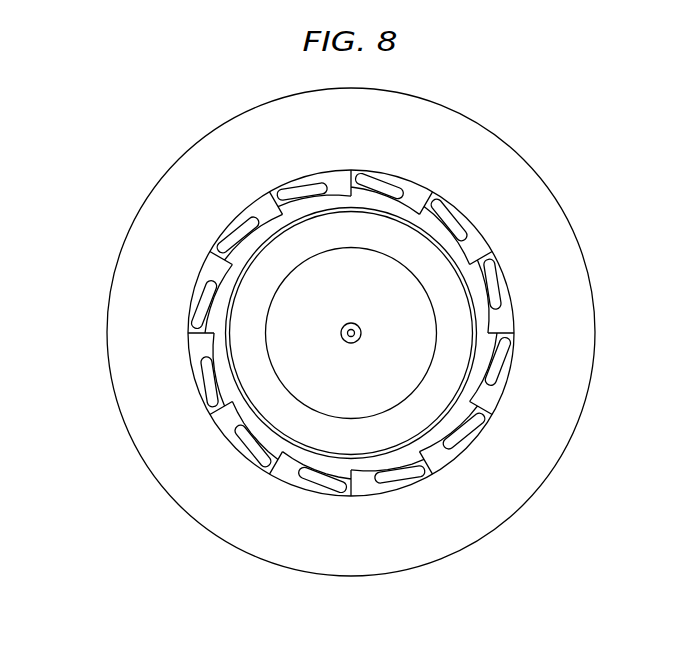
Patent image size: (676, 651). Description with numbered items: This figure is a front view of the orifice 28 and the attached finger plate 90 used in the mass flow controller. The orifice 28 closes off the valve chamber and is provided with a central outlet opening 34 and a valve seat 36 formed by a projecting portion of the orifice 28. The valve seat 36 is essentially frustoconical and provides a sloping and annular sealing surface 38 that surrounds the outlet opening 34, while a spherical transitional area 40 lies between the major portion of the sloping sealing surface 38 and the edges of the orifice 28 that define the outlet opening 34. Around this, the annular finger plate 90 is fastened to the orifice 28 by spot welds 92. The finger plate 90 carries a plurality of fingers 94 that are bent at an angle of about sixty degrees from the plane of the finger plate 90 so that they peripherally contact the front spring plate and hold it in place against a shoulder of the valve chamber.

The orifice 28 is at (94, 296).
The central outlet opening 34 is at (341, 333).
The valve seat 36 is at (327, 270).
The sloping and annular sealing surface 38 is at (341, 391).
The spherical transitional area 40 is at (361, 332).
The annular finger plate 90 is at (319, 514).
The spot welds 92 is at (98, 428).
The fingers 94 is at (292, 190).